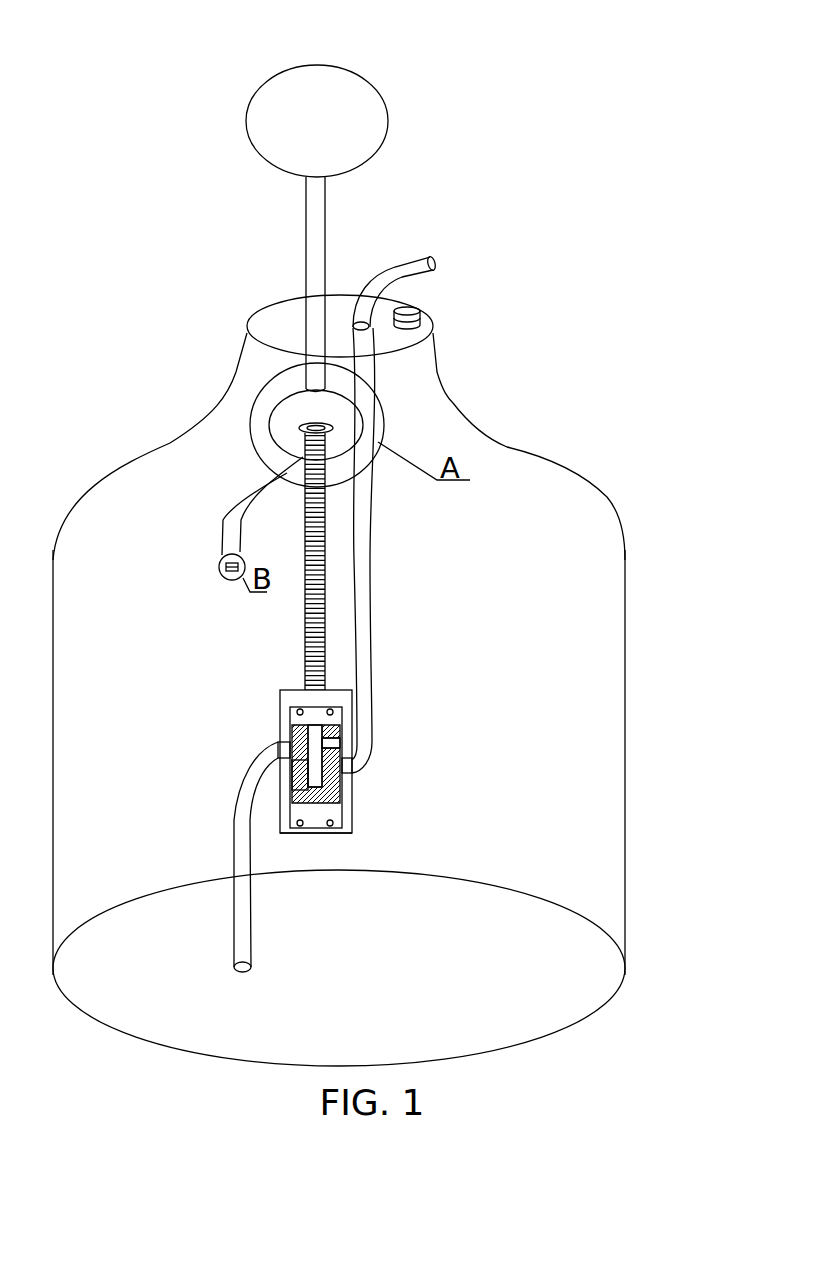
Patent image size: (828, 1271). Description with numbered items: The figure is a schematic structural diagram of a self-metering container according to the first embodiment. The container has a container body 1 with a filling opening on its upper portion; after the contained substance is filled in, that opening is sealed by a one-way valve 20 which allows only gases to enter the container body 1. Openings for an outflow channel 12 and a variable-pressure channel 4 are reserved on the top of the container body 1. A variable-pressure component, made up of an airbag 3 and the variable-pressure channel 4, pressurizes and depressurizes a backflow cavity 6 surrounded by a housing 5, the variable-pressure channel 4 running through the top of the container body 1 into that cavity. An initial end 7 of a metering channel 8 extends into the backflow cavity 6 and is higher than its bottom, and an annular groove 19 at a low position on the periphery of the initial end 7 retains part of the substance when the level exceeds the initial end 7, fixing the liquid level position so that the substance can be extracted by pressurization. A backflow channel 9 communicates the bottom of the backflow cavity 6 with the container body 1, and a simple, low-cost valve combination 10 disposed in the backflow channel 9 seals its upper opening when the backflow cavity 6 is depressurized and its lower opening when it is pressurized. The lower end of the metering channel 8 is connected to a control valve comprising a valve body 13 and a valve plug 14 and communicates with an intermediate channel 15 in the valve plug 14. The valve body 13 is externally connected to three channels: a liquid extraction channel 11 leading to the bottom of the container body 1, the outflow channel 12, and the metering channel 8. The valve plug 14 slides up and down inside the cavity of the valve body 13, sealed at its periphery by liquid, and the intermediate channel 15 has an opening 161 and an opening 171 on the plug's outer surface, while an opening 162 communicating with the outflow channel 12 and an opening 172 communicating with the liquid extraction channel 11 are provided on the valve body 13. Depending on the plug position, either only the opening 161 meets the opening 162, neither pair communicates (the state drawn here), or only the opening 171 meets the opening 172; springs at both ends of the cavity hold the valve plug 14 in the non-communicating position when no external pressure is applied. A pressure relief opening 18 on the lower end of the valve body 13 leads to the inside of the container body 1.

The container body 1 is at (573, 575).
The airbag 3 is at (388, 124).
The variable-pressure channel 4 is at (317, 237).
The housing 5 is at (267, 423).
The backflow cavity 6 is at (288, 408).
The initial end 7 is at (317, 430).
The metering channel 8 is at (307, 662).
The backflow channel 9 is at (248, 497).
The valve combination 10 is at (223, 562).
The liquid extraction channel 11 is at (240, 833).
The outflow channel 12 is at (370, 643).
The valve body 13 is at (287, 703).
The valve plug 14 is at (333, 795).
The intermediate channel 15 is at (313, 728).
The opening 161 is at (333, 740).
The opening 162 is at (346, 772).
The opening 171 is at (298, 776).
The opening 172 is at (283, 742).
The pressure relief opening 18 is at (315, 835).
The annular groove 19 is at (335, 427).
The one-way valve 20 is at (418, 313).